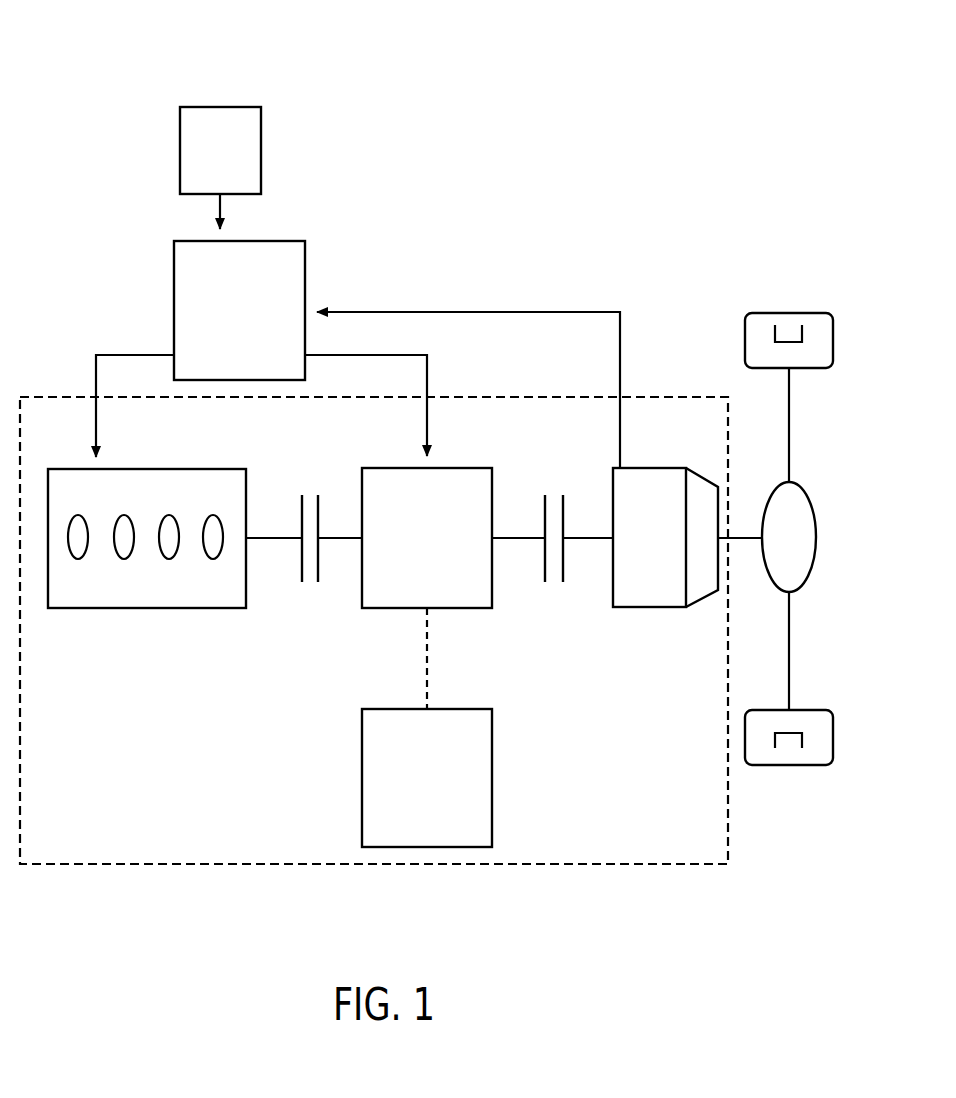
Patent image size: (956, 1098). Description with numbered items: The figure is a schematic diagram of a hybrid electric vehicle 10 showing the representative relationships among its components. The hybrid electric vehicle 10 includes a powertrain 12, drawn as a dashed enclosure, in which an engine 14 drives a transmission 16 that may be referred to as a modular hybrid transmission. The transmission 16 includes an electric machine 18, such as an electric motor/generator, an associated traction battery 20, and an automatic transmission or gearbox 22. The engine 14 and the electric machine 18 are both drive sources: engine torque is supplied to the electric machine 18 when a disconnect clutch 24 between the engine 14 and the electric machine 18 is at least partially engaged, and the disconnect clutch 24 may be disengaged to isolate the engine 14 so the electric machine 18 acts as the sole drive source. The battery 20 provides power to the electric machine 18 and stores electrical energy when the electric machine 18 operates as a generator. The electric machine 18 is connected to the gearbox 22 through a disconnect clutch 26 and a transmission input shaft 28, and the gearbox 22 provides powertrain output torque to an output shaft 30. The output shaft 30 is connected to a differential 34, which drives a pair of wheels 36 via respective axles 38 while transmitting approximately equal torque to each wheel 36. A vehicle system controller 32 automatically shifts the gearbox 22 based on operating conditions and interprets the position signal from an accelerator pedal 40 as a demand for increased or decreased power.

The hybrid electric vehicle 10 is at (116, 62).
The powertrain 12 is at (686, 875).
The engine 14 is at (167, 469).
The transmission 16 is at (284, 722).
The electric machine 18 is at (362, 584).
The traction battery 20 is at (493, 778).
The gearbox 22 is at (656, 608).
The disconnect clutch 24 is at (302, 505).
The disconnect clutch 26 is at (565, 505).
The transmission input shaft 28 is at (597, 540).
The output shaft 30 is at (737, 536).
The vehicle system controller 32 is at (287, 241).
The differential 34 is at (802, 490).
The wheels 36 is at (786, 313).
The axles 38 is at (790, 420).
The accelerator pedal 40 is at (223, 107).